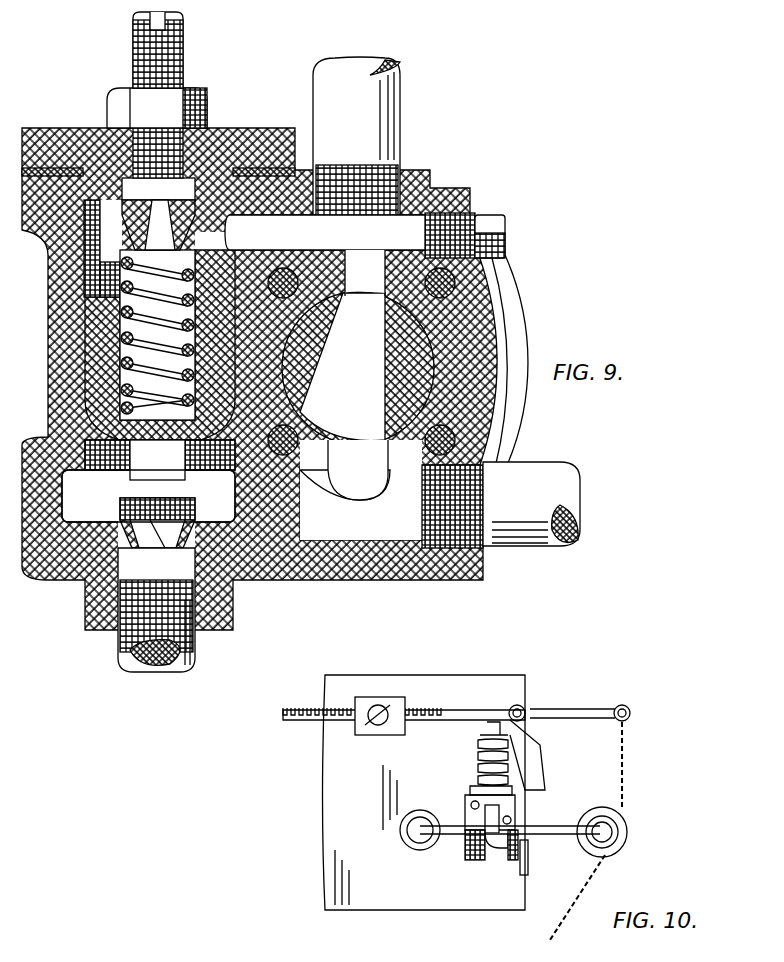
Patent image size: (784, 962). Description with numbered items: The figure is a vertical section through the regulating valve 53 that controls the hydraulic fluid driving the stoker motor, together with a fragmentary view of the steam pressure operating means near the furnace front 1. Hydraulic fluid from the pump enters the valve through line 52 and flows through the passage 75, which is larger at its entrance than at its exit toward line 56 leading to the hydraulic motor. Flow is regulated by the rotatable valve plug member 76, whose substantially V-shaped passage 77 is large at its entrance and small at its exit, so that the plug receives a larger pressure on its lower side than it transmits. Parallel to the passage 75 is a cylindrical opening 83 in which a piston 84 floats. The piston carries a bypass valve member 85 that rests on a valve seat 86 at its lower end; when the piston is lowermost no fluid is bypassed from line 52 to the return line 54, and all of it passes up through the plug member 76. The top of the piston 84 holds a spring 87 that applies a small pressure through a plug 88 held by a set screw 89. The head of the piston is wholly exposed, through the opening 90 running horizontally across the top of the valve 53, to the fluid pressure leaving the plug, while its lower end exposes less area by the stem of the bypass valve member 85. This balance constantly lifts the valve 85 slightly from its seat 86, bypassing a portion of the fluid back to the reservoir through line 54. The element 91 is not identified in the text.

In FIG. 10, the furnace front 1 is at (490, 680).
In FIG. 9, the line 52 is at (545, 462).
In FIG. 9, the regulating valve 53 is at (495, 320).
In FIG. 9, the line 54 is at (118, 653).
In FIG. 9, the line 56 is at (400, 128).
In FIG. 9, the passage 75 is at (330, 457).
In FIG. 9, the rotatable valve plug member 76 is at (420, 366).
In FIG. 9, the V-shaped passage 77 is at (335, 348).
In FIG. 9, the cylindrical opening 83 is at (220, 470).
In FIG. 9, the piston 84 is at (212, 298).
In FIG. 9, the bypass valve member 85 is at (118, 525).
In FIG. 9, the valve seat 86 is at (192, 525).
In FIG. 9, the spring 87 is at (190, 266).
In FIG. 9, the plug 88 is at (124, 202).
In FIG. 9, the set screw 89 is at (183, 68).
In FIG. 9, the opening 90 is at (268, 228).
In FIG. 10, the bellows 91 is at (475, 745).